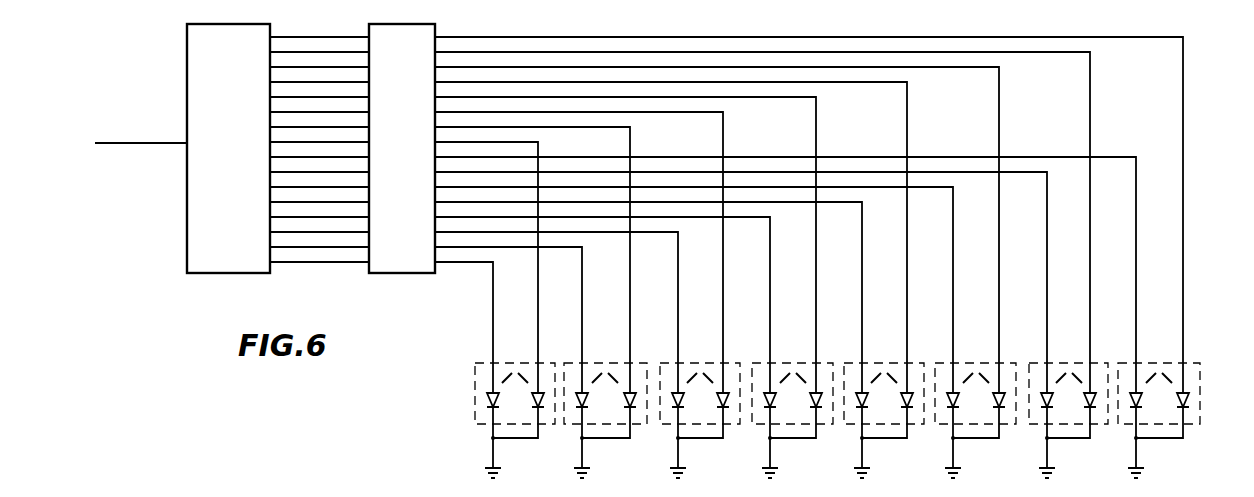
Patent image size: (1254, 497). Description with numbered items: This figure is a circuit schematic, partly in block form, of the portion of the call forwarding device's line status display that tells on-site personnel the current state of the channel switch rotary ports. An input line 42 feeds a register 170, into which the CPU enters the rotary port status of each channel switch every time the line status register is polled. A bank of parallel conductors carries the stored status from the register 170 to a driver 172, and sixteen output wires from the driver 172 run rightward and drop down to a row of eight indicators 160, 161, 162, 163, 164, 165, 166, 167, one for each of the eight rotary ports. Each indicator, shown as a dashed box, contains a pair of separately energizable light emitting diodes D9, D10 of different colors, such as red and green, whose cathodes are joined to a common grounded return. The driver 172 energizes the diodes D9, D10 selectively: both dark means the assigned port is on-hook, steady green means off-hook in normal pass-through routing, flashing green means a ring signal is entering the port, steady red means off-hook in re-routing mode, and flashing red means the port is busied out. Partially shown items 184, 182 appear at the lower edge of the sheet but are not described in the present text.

The input line to register 42 is at (120, 143).
The register 170 is at (228, 148).
The driver 172 is at (402, 148).
The indicator 160 is at (501, 425).
The indicator 161 is at (609, 427).
The indicator 162 is at (705, 427).
The indicator 163 is at (797, 427).
The indicator 164 is at (889, 427).
The indicator 165 is at (980, 427).
The indicator 166 is at (1076, 427).
The indicator 167 is at (1175, 427).
The light emitting diode D9 is at (489, 399).
The light emitting diode D10 is at (543, 402).
The component (partially shown) 184 is at (298, 496).
The component (partially shown) 182 is at (397, 496).